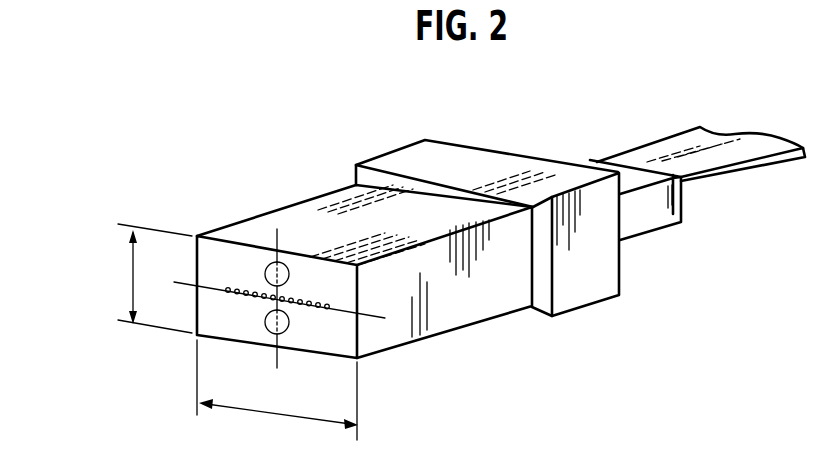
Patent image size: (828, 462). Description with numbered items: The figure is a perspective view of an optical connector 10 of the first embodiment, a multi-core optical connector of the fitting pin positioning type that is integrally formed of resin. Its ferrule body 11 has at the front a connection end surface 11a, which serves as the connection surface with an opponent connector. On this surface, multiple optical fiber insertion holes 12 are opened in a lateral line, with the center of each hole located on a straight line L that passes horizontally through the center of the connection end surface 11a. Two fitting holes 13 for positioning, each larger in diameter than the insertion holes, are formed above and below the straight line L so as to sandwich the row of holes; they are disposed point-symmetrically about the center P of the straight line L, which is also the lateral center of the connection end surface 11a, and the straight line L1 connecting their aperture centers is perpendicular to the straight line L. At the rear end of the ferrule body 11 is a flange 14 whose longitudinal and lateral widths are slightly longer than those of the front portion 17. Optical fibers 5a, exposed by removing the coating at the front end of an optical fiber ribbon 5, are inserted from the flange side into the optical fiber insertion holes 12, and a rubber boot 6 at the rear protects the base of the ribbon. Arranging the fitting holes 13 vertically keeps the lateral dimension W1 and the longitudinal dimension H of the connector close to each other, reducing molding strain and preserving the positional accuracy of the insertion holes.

The optical connector 10 is at (343, 208).
The ferrule body 11 is at (457, 187).
The connection end surface 11a is at (213, 257).
The fitting holes 13 is at (265, 264).
The front portion 17 is at (403, 113).
The flange 14 is at (400, 167).
The optical fiber ribbon 5 is at (677, 143).
The optical fibers 5a is at (323, 309).
The boot 6 is at (662, 221).
The optical fiber insertion holes 12 is at (303, 347).
The straight line L is at (377, 316).
The straight line connecting aperture centers of the fitting holes L1 is at (272, 246).
The center of the straight line L P is at (273, 294).
The longitudinal dimension (height dimension) H is at (151, 278).
The lateral dimension (width dimension) W1 is at (277, 397).